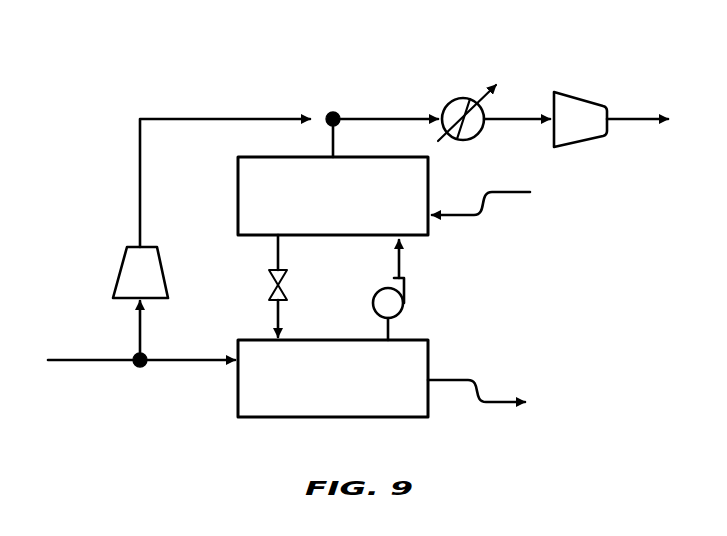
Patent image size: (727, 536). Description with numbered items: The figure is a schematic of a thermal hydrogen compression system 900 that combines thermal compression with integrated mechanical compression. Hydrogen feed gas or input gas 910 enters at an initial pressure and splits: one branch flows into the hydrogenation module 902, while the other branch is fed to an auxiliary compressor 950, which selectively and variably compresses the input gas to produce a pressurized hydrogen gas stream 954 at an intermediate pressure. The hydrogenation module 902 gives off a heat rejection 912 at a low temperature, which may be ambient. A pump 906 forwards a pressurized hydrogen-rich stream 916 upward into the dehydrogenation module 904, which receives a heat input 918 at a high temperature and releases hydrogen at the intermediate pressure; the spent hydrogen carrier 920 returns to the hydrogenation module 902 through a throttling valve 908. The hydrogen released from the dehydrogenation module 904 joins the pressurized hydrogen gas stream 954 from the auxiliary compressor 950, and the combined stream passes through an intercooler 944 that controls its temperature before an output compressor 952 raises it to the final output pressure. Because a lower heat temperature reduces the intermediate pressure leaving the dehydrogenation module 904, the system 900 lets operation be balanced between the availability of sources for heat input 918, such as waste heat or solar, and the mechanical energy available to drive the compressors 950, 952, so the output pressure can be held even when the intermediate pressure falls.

The thermal hydrogen compression system 900 is at (118, 70).
The hydrogenation module 902 is at (238, 406).
The dehydrogenation module 904 is at (236, 172).
The pump 906 is at (406, 311).
The throttling valve 908 is at (268, 283).
The hydrogen feed gas or input gas 910 is at (83, 363).
The heat rejection 912 is at (478, 380).
The pressurized hydrogen-rich stream 916 is at (404, 265).
The heat input 918 is at (481, 215).
The hydrogen carrier 920 is at (272, 318).
The intercooler 944 is at (447, 100).
The auxiliary compressor 950 is at (120, 268).
The output compressor 952 is at (587, 101).
The pressurized hydrogen gas stream 954 is at (230, 116).